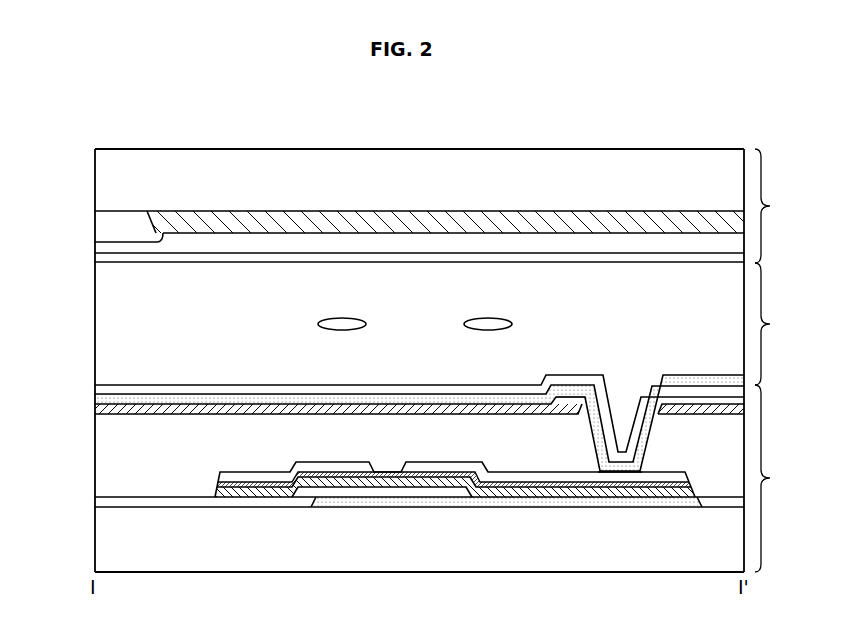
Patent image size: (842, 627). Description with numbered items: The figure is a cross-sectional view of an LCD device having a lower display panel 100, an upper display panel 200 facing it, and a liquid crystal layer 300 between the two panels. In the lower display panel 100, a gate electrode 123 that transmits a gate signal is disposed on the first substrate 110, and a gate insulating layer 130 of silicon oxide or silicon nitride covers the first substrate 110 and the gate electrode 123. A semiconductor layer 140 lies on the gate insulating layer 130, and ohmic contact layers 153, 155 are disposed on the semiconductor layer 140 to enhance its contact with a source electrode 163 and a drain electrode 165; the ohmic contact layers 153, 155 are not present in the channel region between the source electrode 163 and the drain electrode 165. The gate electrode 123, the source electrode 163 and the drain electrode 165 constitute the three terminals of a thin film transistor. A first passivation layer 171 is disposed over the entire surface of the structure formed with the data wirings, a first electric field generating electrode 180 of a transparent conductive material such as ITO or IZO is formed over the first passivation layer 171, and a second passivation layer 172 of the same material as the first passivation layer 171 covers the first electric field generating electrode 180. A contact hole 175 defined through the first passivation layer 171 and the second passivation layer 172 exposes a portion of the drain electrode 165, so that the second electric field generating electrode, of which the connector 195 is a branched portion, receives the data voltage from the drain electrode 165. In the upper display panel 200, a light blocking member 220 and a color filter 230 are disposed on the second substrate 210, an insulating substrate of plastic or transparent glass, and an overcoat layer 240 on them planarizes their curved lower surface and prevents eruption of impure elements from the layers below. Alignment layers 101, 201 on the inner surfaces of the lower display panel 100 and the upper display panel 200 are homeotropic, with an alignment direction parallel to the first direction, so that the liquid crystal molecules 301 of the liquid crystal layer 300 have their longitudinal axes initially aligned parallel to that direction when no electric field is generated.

The lower display panel 100 is at (784, 478).
The alignment layer 101 is at (95, 386).
The first substrate 110 is at (152, 545).
The gate electrode 123 is at (388, 482).
The gate insulating layer 130 is at (700, 503).
The semiconductor layer 140 is at (432, 492).
The ohmic contact layer 153 is at (330, 475).
The ohmic contact layer 155 is at (458, 475).
The source electrode 163 is at (265, 476).
The drain electrode 165 is at (643, 482).
The first passivation layer 171 is at (105, 459).
The second passivation layer 172 is at (95, 398).
The contact hole 175 is at (594, 440).
The first electric field generating electrode 180 is at (95, 410).
The connector 195 is at (571, 393).
The upper display panel 200 is at (784, 206).
The alignment layer 201 is at (317, 257).
The second substrate 210 is at (419, 168).
The light blocking member 220 is at (643, 222).
The color filter 230 is at (124, 227).
The overcoat layer 240 is at (226, 247).
The liquid crystal layer 300 is at (784, 324).
The liquid crystal molecules 301 is at (480, 320).